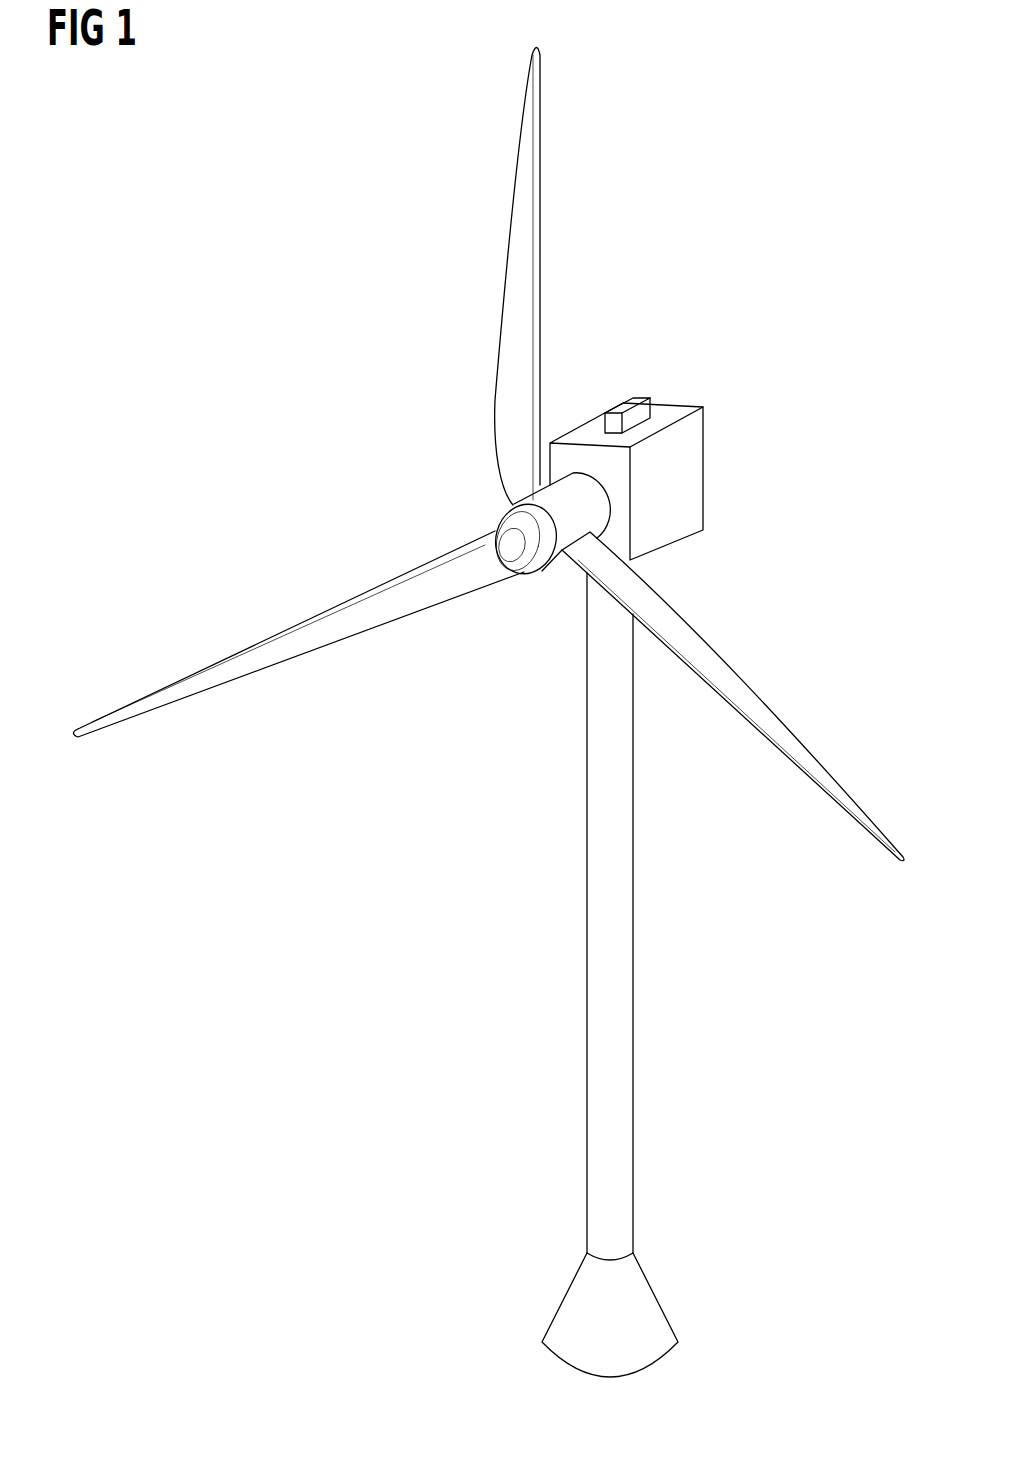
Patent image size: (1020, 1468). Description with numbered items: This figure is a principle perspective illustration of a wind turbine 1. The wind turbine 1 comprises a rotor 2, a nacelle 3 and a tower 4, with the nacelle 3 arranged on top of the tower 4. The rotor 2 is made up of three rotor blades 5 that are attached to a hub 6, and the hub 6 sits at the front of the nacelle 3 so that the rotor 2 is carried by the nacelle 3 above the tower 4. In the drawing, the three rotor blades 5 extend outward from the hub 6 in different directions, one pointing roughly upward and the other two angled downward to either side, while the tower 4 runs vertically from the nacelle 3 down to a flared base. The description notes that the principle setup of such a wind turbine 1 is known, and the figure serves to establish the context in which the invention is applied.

The wind turbine 1 is at (250, 297).
The rotor 2 is at (260, 633).
The nacelle 3 is at (680, 488).
The tower 4 is at (618, 1168).
The rotor blades 5 is at (520, 293).
The hub 6 is at (590, 515).